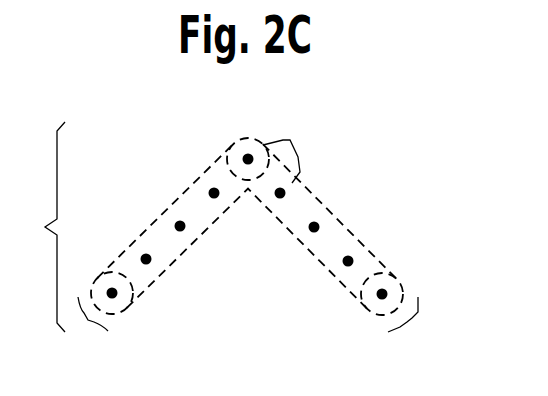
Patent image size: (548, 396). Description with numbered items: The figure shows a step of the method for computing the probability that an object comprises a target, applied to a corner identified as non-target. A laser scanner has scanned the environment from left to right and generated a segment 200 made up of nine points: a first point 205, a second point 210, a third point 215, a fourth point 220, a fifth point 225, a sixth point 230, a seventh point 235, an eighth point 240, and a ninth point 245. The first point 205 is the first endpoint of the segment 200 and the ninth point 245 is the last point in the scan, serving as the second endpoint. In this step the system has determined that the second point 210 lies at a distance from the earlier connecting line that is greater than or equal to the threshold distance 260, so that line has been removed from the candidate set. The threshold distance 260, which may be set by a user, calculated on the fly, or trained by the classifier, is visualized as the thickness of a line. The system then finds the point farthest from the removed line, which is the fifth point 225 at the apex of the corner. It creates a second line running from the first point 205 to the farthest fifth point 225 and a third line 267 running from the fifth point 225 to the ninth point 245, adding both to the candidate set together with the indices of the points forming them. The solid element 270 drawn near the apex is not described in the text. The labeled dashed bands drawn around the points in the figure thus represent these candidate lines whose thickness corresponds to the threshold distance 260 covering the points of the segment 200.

The segment 200 is at (388, 132).
The first point 205 is at (112, 293).
The second point 210 is at (146, 259).
The third point 215 is at (180, 226).
The fourth point 220 is at (214, 193).
The fifth point 225 is at (248, 159).
The sixth point 230 is at (280, 193).
The seventh point 235 is at (314, 227).
The eighth point 240 is at (348, 261).
The ninth point 245 is at (382, 294).
The threshold distance 260 is at (88, 320).
The third line 267 is at (375, 315).
The corner portion 270 is at (290, 143).